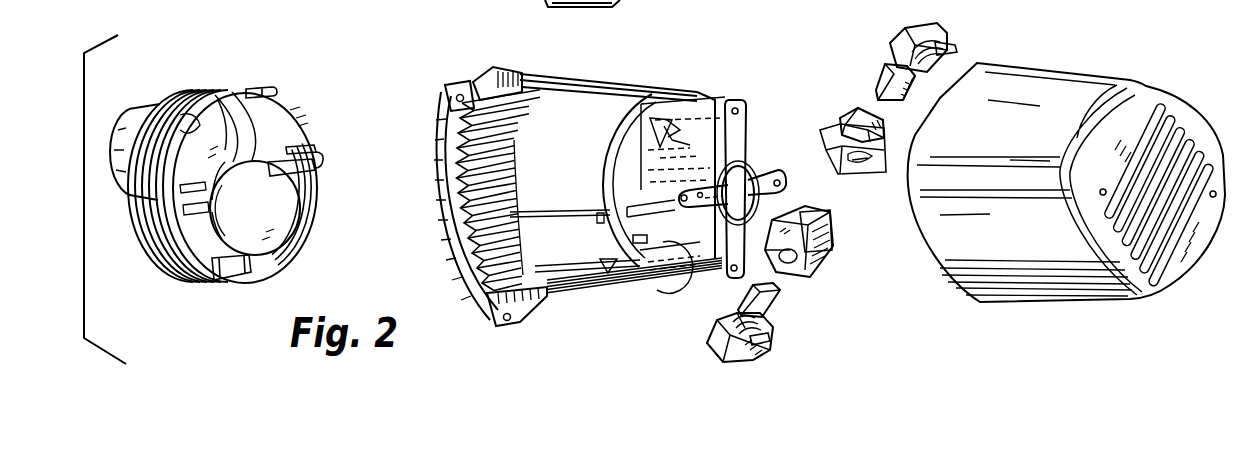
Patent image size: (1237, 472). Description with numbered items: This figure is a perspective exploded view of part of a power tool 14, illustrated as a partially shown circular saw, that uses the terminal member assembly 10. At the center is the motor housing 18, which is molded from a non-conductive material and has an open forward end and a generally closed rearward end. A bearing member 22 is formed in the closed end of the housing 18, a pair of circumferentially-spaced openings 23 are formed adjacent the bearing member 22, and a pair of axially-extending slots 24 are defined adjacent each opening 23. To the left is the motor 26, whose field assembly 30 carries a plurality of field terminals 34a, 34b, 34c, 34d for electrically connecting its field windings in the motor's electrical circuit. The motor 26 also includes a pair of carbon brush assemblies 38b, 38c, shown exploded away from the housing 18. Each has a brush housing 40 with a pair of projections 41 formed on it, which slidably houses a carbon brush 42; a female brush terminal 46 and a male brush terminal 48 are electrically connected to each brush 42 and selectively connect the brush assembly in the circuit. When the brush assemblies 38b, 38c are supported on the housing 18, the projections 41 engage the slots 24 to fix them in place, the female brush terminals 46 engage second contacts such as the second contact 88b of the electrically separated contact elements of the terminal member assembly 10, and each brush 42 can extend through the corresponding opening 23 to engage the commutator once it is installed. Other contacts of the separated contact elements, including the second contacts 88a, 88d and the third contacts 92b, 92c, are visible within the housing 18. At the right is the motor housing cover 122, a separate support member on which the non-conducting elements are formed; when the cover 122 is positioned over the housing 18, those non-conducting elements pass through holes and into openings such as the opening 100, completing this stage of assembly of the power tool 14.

The terminal member assembly 10 is at (712, 273).
The power tool 14 is at (362, 78).
The motor housing 18 is at (442, 145).
The bearing member 22 is at (745, 168).
The openings 23 is at (664, 240).
The slots 24 is at (686, 241).
The motor 26 is at (203, 293).
The field assembly 30 is at (196, 80).
The field terminal 34a is at (240, 272).
The field terminal 34b is at (213, 212).
The field terminal 34c is at (343, 135).
The field terminal 34d is at (273, 76).
The carbon brush assembly 38b is at (798, 318).
The carbon brush assembly 38c is at (838, 96).
The brush housing 40 is at (845, 118).
The projections 41 is at (885, 163).
The carbon brush 42 is at (893, 72).
The female brush terminal 46 is at (897, 52).
The male brush terminal 48 is at (957, 50).
The second contact 88a is at (647, 150).
The second contact 88b is at (630, 238).
The second contact 88d is at (665, 125).
The third contact 92b is at (647, 168).
The third contact 92c is at (643, 127).
The opening 100 is at (1120, 0).
The motor housing cover 122 is at (1027, 122).